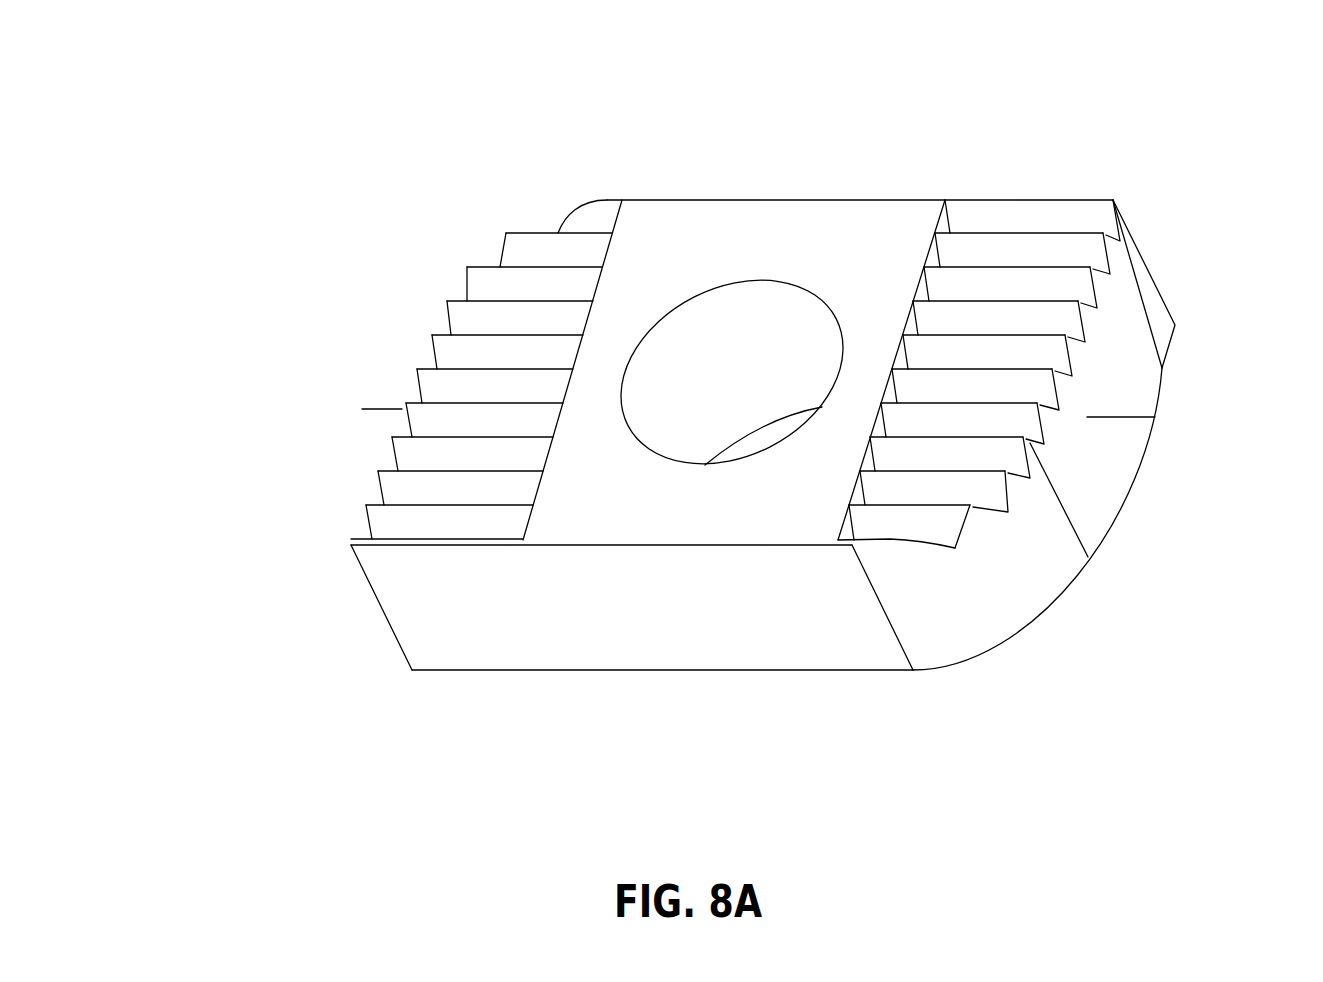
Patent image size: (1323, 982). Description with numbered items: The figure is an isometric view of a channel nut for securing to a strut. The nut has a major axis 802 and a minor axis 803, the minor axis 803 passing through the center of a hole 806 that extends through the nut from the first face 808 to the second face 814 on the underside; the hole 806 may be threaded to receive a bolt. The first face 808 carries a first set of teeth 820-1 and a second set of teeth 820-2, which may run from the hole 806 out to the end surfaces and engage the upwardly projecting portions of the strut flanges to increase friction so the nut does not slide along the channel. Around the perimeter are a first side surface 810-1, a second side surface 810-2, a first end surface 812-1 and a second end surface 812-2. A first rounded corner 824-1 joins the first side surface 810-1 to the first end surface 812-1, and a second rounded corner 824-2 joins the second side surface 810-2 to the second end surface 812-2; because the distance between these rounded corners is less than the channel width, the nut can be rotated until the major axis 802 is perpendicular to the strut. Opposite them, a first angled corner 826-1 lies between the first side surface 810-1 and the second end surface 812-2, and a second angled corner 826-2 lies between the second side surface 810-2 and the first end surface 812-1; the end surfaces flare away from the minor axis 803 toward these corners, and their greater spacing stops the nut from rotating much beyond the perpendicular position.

The minor axis 803 is at (700, 417).
The major axis 802 is at (761, 414).
The hole 806 is at (735, 362).
The first face 808 is at (645, 223).
The first side surface 810-1 is at (516, 637).
The second side surface 810-2 is at (978, 197).
The first end surface 812-1 is at (1070, 378).
The second end surface 812-2 is at (428, 384).
The second face 814 is at (837, 680).
The first set of teeth 820-1 is at (467, 312).
The second set of teeth 820-2 is at (1025, 427).
The first rounded corner 824-1 is at (1017, 590).
The second rounded corner 824-2 is at (558, 228).
The first angled corner 826-1 is at (373, 592).
The second angled corner 826-2 is at (1130, 237).